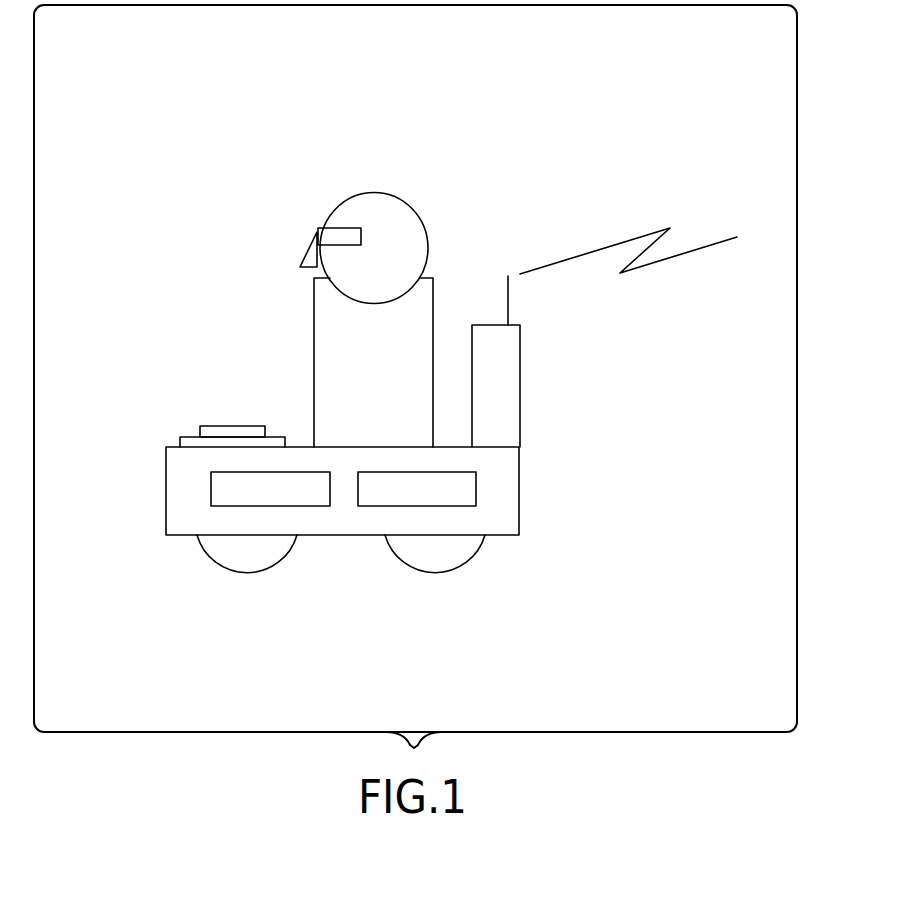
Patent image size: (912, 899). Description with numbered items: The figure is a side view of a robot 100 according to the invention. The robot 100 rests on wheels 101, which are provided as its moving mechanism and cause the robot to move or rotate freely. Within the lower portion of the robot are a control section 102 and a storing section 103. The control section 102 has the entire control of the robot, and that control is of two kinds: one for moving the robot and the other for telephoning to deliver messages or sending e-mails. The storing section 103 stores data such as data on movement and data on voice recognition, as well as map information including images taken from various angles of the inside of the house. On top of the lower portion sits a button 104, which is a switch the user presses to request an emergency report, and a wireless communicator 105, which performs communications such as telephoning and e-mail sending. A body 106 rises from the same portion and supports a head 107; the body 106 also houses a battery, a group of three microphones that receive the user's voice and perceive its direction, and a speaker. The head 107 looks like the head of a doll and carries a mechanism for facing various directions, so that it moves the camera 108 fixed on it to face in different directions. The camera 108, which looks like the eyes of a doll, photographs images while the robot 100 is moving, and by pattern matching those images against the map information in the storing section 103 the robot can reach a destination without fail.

The robot 100 is at (529, 162).
The wheels 101 is at (418, 549).
The control section 102 is at (476, 491).
The storing section 103 is at (211, 490).
The button (switch) 104 is at (222, 425).
The wireless communicator 105 is at (503, 367).
The body 106 is at (323, 315).
The head 107 is at (355, 212).
The camera 108 is at (322, 230).